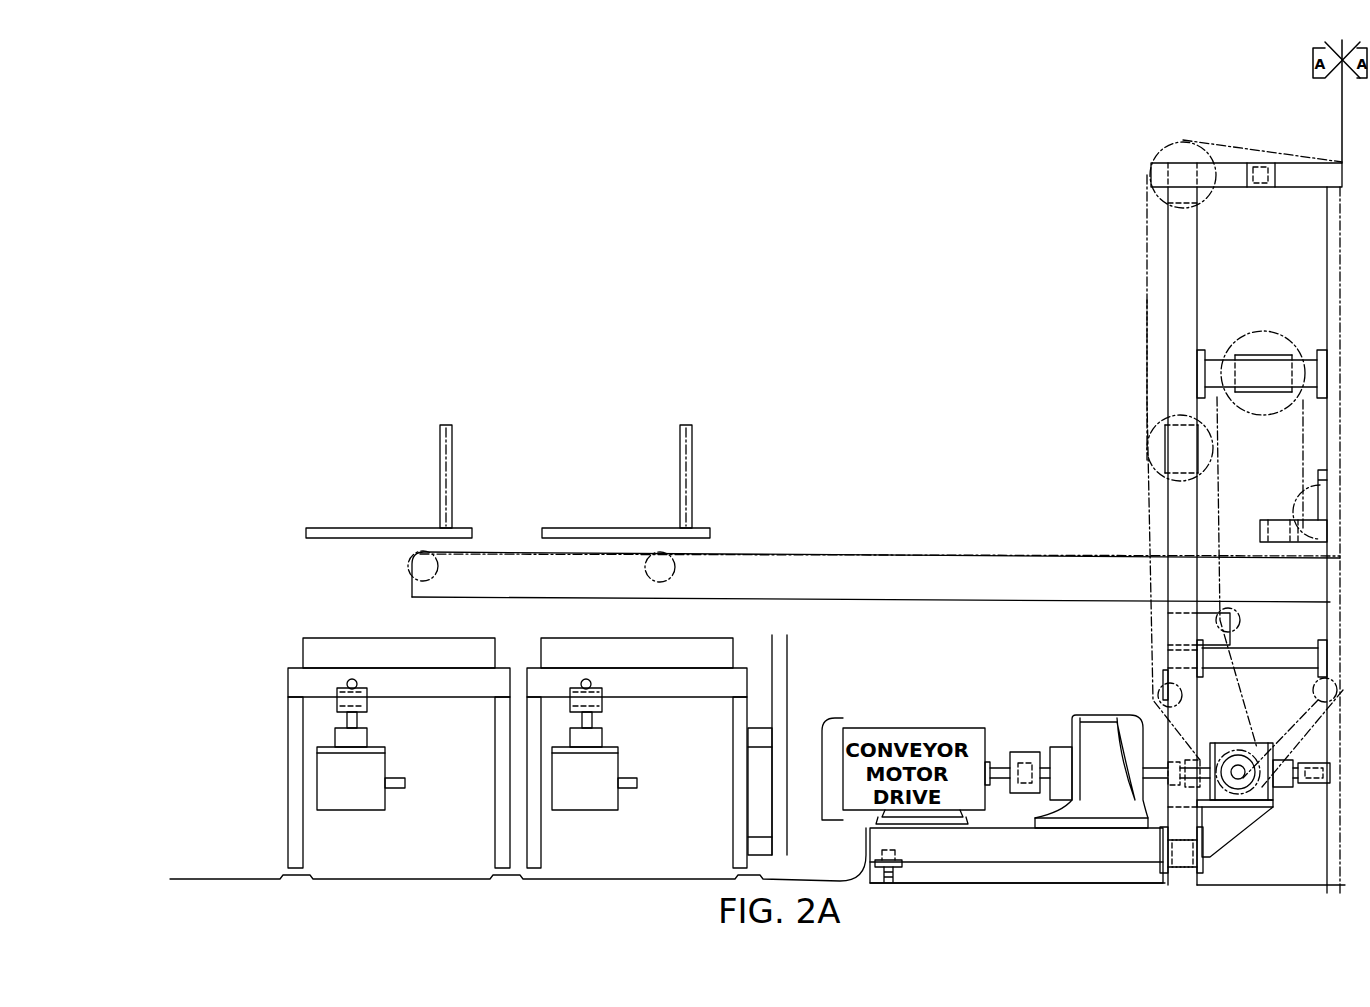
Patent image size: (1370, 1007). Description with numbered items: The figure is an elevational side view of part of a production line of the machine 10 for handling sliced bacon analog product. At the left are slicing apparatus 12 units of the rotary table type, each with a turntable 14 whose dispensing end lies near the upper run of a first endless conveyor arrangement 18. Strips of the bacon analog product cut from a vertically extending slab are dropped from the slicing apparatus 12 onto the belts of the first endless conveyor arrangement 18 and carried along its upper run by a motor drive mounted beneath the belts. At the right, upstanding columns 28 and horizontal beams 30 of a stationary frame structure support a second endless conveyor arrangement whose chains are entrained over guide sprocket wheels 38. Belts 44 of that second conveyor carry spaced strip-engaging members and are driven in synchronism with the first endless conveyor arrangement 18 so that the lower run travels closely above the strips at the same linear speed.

The machine 10 is at (1138, 228).
The slicing apparatus 12 is at (288, 680).
The turntable 14 is at (370, 528).
The first endless conveyor arrangement 18 is at (820, 552).
The upstanding columns 28 is at (1168, 312).
The horizontal beams 30 is at (1295, 160).
The guide sprocket wheels 38 is at (1148, 180).
The belts 44 is at (1145, 380).